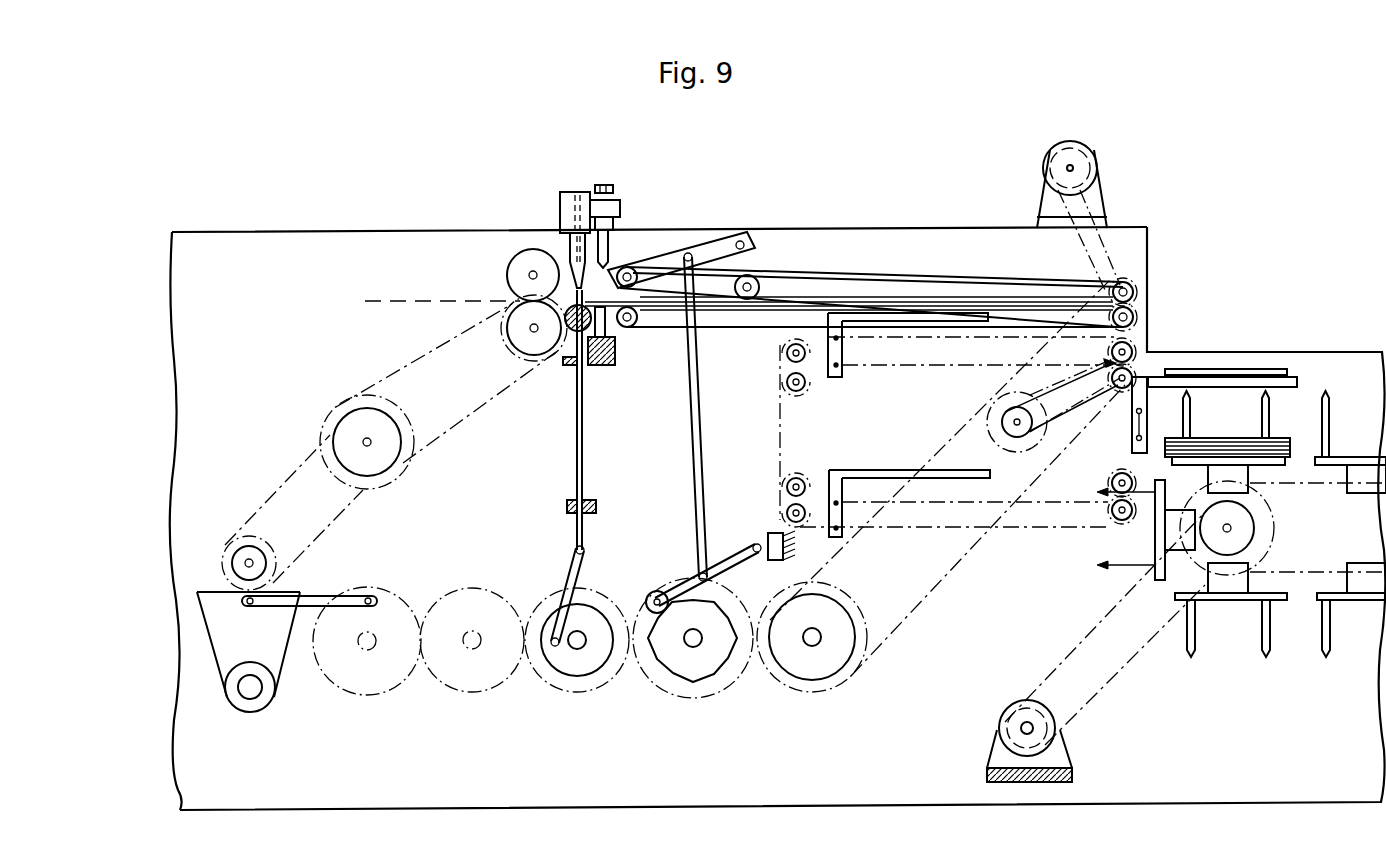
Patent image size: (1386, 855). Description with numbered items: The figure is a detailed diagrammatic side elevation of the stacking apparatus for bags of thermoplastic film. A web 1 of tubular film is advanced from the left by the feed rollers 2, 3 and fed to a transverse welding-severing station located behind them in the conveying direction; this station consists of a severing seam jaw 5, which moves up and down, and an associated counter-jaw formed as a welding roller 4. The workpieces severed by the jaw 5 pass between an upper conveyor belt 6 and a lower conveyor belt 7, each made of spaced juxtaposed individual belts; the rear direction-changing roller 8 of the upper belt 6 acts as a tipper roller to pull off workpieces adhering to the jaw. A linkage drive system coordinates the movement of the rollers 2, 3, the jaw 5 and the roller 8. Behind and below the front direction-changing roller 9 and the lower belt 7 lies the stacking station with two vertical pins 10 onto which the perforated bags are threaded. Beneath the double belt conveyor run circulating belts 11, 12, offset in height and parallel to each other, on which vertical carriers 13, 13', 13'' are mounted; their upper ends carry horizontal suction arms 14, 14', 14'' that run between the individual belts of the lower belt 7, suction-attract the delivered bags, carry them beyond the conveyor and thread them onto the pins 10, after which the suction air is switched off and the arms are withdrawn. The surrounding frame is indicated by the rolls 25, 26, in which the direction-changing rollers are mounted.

The web 1 is at (459, 301).
The feed roller 2 is at (524, 265).
The feed roller 3 is at (524, 341).
The welding roller 4 is at (592, 322).
The severing seam jaw 5 is at (568, 258).
The upper conveyor belt 6 is at (835, 273).
The lower conveyor belt 7 is at (760, 328).
The rear direction-changing roller 8 is at (629, 267).
The front direction-changing roller 9 is at (1136, 292).
The vertical pins 10 is at (1262, 418).
The circulating belt 11 is at (903, 340).
The circulating belt 12 is at (1020, 503).
The vertical carrier 13 is at (865, 519).
The vertical carrier 13' is at (863, 356).
The vertical carrier 13'' is at (1178, 383).
The suction arm 14 is at (909, 452).
The suction arm 14' is at (908, 277).
The suction arm 14'' is at (1228, 350).
The roll of the frame 25 is at (240, 232).
The roll of the frame 26 is at (782, 496).